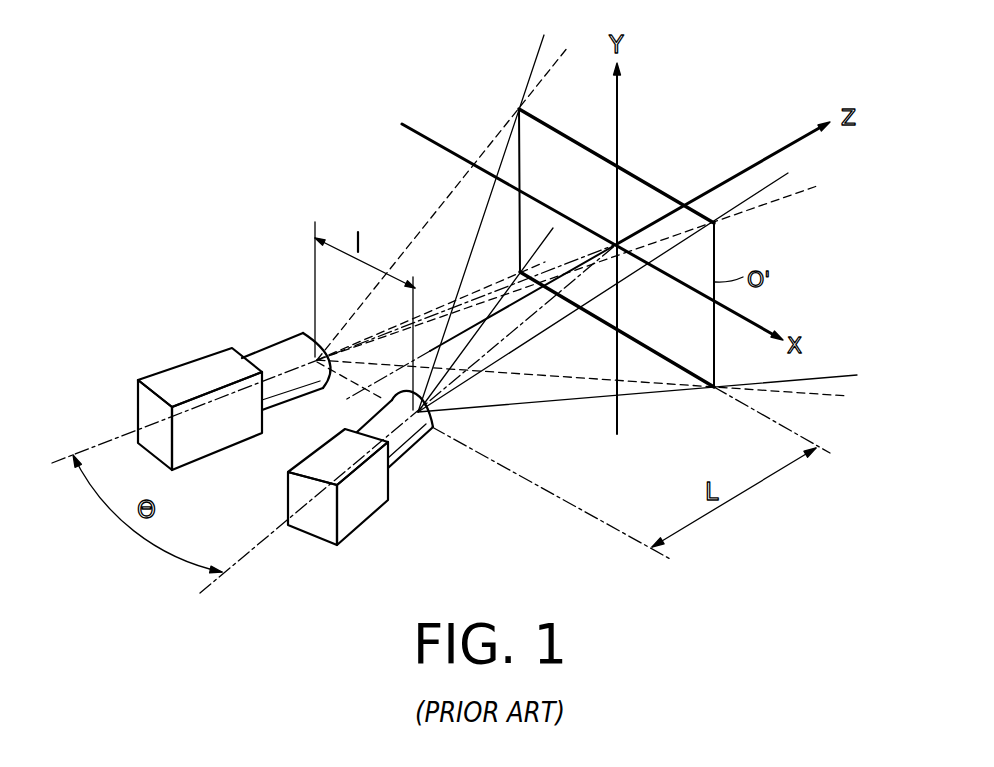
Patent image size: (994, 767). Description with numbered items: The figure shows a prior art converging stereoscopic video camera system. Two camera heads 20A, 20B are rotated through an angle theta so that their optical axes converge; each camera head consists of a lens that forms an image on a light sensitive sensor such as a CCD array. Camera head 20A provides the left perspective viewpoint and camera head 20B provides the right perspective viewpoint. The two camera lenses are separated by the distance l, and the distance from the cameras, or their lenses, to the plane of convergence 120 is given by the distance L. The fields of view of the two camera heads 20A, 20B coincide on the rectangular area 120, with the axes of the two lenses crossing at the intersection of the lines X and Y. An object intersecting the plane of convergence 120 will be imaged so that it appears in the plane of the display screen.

The camera head 20A is at (193, 373).
The camera head 20B is at (357, 515).
The plane of convergence 120 is at (637, 173).